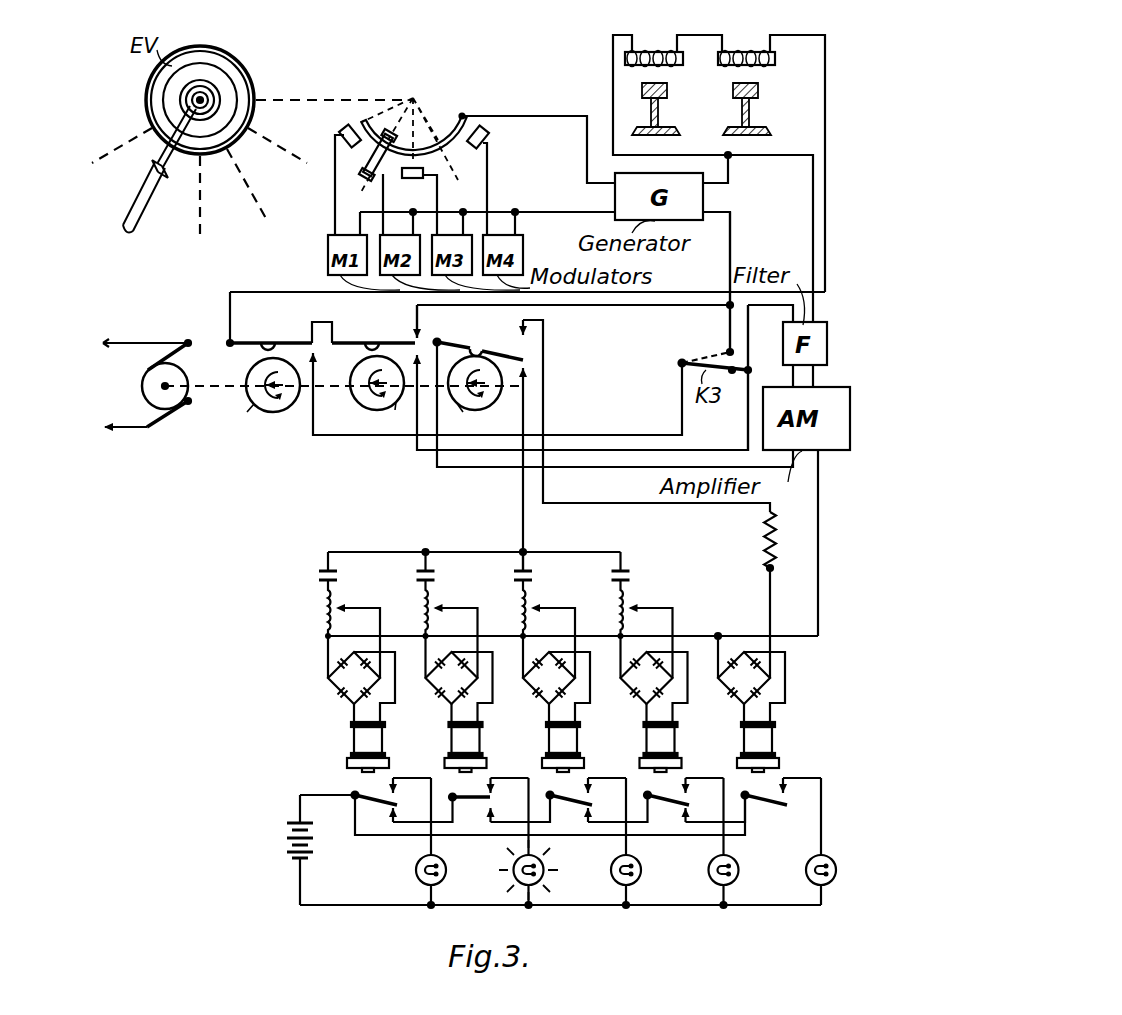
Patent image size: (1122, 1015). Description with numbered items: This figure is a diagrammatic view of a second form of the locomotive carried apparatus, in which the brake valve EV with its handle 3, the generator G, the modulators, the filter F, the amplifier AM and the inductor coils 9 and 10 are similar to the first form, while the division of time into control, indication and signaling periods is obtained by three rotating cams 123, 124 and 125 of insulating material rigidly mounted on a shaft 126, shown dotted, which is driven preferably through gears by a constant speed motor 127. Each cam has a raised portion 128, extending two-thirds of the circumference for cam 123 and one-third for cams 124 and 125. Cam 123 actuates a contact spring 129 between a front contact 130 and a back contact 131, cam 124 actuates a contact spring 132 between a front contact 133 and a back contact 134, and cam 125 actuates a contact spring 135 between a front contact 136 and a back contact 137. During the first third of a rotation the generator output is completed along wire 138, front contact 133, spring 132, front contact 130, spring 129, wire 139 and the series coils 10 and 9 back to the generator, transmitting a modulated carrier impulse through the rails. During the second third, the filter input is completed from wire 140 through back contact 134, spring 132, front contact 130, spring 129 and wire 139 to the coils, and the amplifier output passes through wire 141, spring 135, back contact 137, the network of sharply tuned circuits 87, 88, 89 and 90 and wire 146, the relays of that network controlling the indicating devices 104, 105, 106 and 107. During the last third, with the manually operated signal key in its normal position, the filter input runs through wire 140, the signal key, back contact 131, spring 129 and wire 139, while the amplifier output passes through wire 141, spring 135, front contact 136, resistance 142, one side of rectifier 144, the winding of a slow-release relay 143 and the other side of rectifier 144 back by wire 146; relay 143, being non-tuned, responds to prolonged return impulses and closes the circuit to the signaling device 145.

The handle 3 is at (129, 210).
The inductor coil 9 is at (654, 48).
The inductor coil 10 is at (746, 48).
The sharply tuned circuit 87 is at (349, 615).
The sharply tuned circuit 88 is at (447, 615).
The sharply tuned circuit 89 is at (544, 615).
The sharply tuned circuit 90 is at (642, 615).
The indicating device 104 is at (414, 875).
The indicating device 105 is at (510, 877).
The indicating device 106 is at (612, 875).
The indicating device 107 is at (709, 875).
The rotating cam 123 is at (276, 412).
The rotating cam 124 is at (360, 399).
The rotating cam 125 is at (490, 405).
The shaft 126 is at (230, 386).
The constant speed motor 127 is at (143, 388).
The raised portion 128 is at (250, 411).
The contact spring 129 is at (268, 344).
The front contact 130 is at (313, 334).
The back contact 131 is at (495, 392).
The contact spring 132 is at (373, 341).
The front contact 133 is at (414, 334).
The back contact 134 is at (437, 341).
The contact spring 135 is at (476, 352).
The front contact 136 is at (528, 337).
The back contact 137 is at (530, 369).
The wire 138 is at (741, 222).
The wire 139 is at (680, 292).
The wire 140 is at (696, 450).
The wire 141 is at (456, 470).
The resistance 142 is at (762, 552).
The slow-release relay 143 is at (773, 752).
The rectifier 144 is at (719, 682).
The signaling device 145 is at (807, 880).
The wire 146 is at (816, 549).